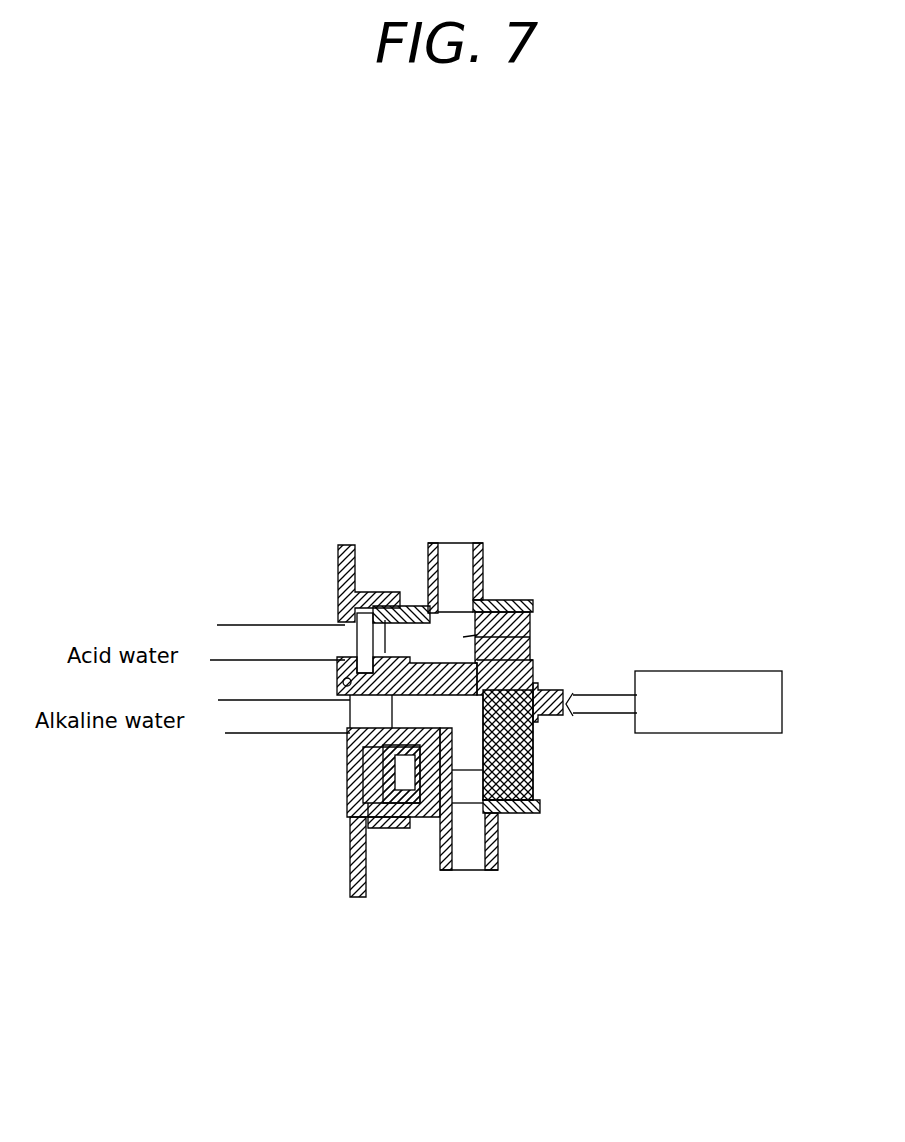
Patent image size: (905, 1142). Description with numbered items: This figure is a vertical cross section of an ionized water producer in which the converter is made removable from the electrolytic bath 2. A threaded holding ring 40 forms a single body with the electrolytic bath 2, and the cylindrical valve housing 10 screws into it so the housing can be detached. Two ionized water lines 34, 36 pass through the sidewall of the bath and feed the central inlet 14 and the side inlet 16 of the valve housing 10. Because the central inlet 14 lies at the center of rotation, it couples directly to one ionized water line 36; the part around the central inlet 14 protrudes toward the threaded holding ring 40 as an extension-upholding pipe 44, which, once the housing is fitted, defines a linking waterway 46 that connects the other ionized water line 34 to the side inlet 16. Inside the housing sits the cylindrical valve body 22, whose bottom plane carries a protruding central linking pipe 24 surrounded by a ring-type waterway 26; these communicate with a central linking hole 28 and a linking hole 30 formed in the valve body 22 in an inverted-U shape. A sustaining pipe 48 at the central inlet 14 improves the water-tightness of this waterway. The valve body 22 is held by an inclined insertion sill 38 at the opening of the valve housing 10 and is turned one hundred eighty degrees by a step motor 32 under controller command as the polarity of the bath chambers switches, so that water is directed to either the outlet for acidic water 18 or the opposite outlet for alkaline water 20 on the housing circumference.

The electrolytic bath 2 is at (349, 545).
The valve housing 10 is at (520, 600).
The central inlet 14 is at (412, 795).
The side inlet 16 is at (384, 600).
The outlet for acidic water 18 is at (487, 600).
The outlet for alkaline water 20 is at (500, 860).
The valve body 22 is at (530, 652).
The central linking pipe 24 is at (483, 770).
The ring-type waterway 26 is at (402, 645).
The central linking hole 28 is at (532, 732).
The linking hole 30 is at (535, 603).
The step motor 32 is at (743, 668).
The ionized water line 34 is at (213, 627).
The ionized water line 36 is at (248, 733).
The insertion sill 38 is at (540, 806).
The threaded holding ring 40 is at (356, 546).
The extension-upholding pipe 44 is at (372, 790).
The linking waterway 46 is at (367, 822).
The sustaining pipe 48 is at (533, 778).